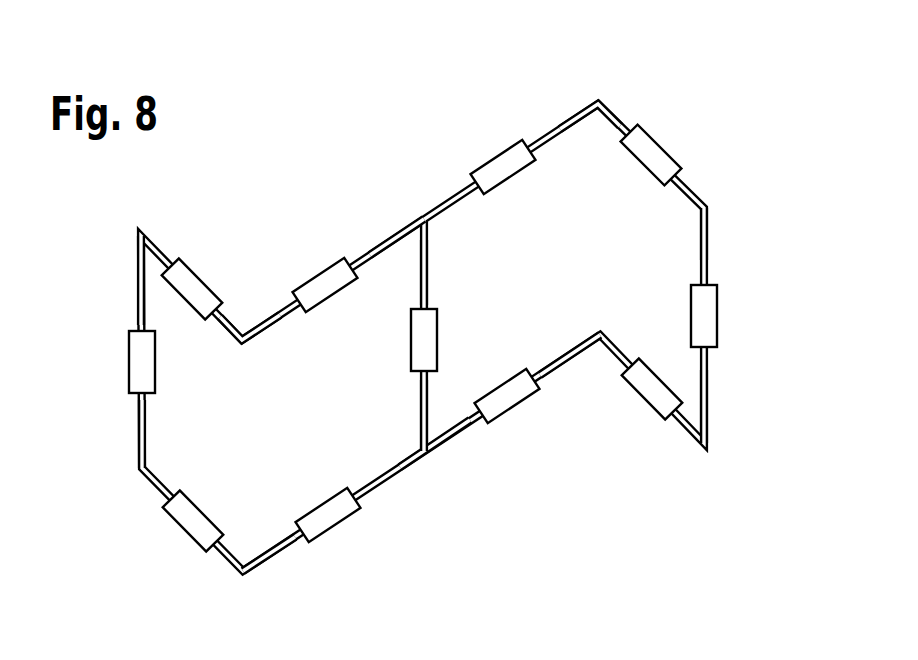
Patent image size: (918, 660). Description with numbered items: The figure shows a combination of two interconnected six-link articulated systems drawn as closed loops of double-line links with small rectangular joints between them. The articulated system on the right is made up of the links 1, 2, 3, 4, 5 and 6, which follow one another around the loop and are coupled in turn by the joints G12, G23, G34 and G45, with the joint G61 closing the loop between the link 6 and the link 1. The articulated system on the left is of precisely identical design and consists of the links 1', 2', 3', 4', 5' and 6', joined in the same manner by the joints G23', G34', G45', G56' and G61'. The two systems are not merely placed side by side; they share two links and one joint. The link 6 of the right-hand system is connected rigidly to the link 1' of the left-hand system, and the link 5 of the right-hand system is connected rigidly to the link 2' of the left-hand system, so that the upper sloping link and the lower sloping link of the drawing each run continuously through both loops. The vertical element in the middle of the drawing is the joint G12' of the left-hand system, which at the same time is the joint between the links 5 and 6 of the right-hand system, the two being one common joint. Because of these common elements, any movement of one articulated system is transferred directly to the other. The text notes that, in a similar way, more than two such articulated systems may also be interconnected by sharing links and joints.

The link 1 is at (584, 94).
The link 2 is at (733, 221).
The link 3 is at (736, 406).
The link 4 is at (570, 378).
The link 5 is at (439, 460).
The link 6 is at (452, 272).
The link 1' is at (397, 208).
The link 2' is at (393, 416).
The link 3' is at (275, 575).
The link 4' is at (109, 441).
The link 5' is at (109, 280).
The link 6' is at (250, 299).
The joint G61 is at (493, 143).
The joint G12 is at (674, 137).
The joint G23 is at (745, 316).
The joint G34 is at (652, 417).
The joint G45 is at (521, 422).
The joint G56' is at (201, 267).
The joint G61' is at (323, 263).
The joint G12' is at (373, 351).
The joint G45' is at (98, 362).
The joint G34' is at (168, 533).
The joint G23' is at (353, 530).